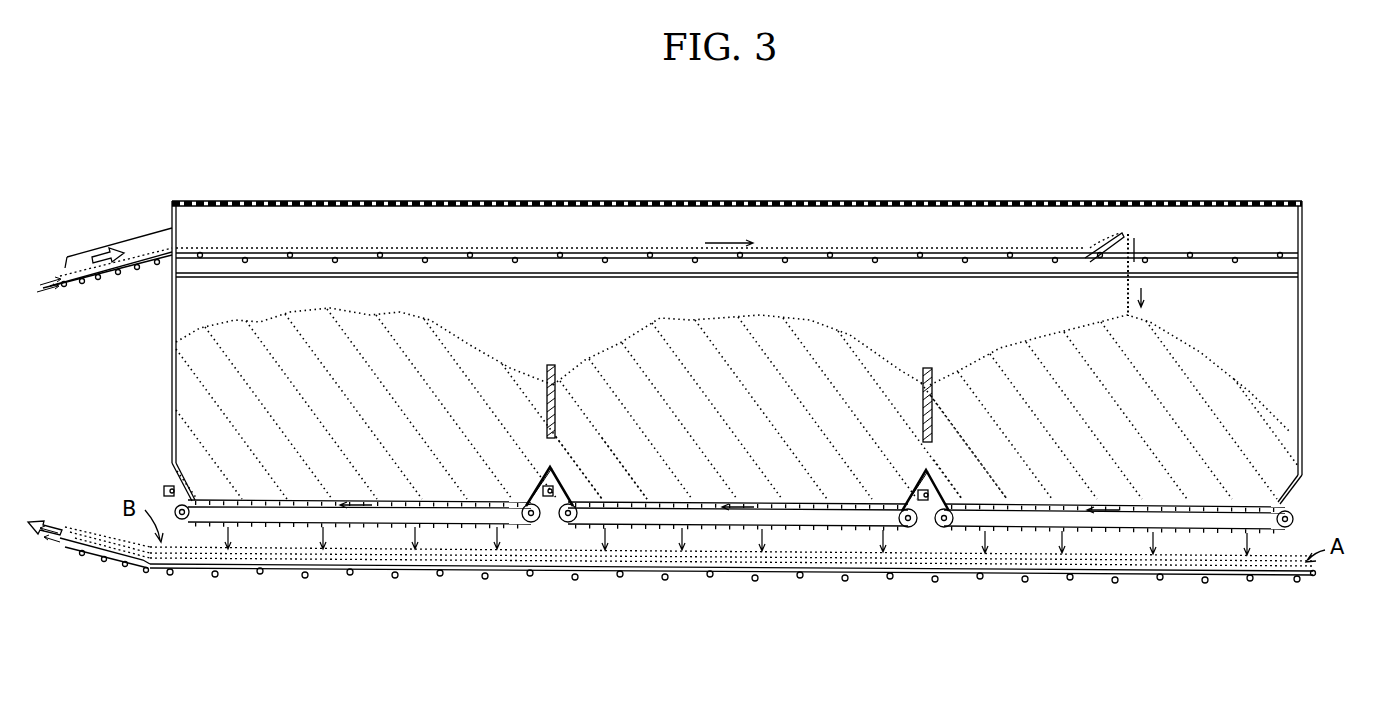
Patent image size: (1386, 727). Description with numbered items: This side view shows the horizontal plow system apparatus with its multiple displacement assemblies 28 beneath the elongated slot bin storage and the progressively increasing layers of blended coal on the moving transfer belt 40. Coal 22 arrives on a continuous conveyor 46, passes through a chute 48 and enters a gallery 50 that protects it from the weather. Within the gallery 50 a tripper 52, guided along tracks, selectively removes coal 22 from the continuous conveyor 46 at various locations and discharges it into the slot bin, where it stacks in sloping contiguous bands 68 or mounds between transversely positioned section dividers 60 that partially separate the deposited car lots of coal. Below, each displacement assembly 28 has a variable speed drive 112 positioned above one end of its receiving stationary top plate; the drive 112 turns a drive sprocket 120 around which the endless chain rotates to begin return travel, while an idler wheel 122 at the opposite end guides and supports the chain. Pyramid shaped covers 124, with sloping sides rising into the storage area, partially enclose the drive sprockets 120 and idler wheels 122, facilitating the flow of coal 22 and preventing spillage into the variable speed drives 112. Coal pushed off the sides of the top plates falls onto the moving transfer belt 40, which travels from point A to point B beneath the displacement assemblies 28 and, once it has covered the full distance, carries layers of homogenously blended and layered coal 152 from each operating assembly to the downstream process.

The coal 22 is at (82, 268).
The displacement assembly 28 is at (575, 540).
The moving transfer belt 40 is at (1235, 572).
The continuous conveyor 46 is at (255, 250).
The chute 48 is at (145, 252).
The gallery 50 is at (517, 203).
The tripper 52 is at (1100, 240).
The section divider 60 is at (549, 364).
The contiguous bands 68 is at (270, 328).
The variable speed drive 112 is at (166, 486).
The drive sprocket 120 is at (187, 505).
The idler wheel 122 is at (530, 504).
The pyramid shaped cover 124 is at (558, 470).
The homogenously blended and layered coal 152 is at (178, 568).